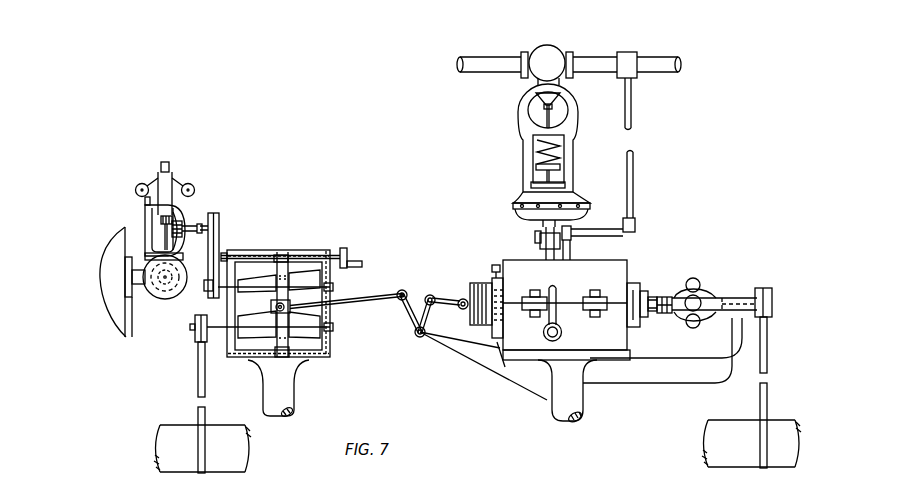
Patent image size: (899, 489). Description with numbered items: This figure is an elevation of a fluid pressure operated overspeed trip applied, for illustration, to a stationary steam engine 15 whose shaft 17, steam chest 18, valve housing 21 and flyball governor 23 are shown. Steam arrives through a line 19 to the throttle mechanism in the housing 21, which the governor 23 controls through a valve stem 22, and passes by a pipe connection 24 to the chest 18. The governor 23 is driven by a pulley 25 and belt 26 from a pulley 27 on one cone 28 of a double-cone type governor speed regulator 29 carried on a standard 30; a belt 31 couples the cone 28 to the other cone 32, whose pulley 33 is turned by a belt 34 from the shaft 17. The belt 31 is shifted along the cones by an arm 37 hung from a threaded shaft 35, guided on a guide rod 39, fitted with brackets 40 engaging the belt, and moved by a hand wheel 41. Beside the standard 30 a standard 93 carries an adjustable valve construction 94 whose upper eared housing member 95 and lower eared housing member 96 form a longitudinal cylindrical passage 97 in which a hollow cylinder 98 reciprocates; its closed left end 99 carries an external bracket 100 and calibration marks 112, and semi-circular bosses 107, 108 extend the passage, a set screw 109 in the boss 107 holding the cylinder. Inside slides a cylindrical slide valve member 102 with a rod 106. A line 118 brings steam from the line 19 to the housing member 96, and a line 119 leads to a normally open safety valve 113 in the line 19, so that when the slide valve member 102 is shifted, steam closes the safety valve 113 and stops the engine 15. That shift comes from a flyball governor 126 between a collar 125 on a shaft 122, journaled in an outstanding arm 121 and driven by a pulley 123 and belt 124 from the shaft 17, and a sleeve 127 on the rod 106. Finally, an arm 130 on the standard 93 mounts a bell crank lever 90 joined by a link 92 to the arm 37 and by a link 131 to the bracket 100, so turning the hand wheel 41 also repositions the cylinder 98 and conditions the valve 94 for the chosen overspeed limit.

The stationary steam engine 15 is at (99, 316).
The shaft 17 is at (168, 446).
The steam chest 18 is at (108, 277).
The line 19 is at (490, 62).
The housing 21 is at (164, 291).
The valve stem 22 is at (165, 240).
The flyball governor 23 is at (170, 178).
The pipe connection 24 is at (137, 286).
The pulley 25 is at (218, 217).
The belt 26 is at (215, 251).
The pulley 27 is at (212, 296).
The cone 28 is at (310, 282).
The double-cone type governor speed regulator 29 is at (346, 366).
The standard 30 is at (281, 398).
The belt 31 is at (273, 285).
The cone 32 is at (252, 333).
The pulley 33 is at (195, 338).
The belt 34 is at (198, 375).
The threaded shaft 35 is at (302, 257).
The arm 37 is at (281, 268).
The guide rod 39 is at (312, 348).
The brackets 40 is at (271, 307).
The hand wheel 41 is at (349, 253).
The bell crank lever 90 is at (413, 316).
The link 92 is at (357, 308).
The standard 93 is at (550, 418).
The adjustable valve construction 94 is at (622, 258).
The upper eared housing member 95 is at (566, 310).
The lower eared housing member 96 is at (513, 340).
The longitudinal cylindrical passage 97 is at (519, 486).
The hollow cylinder 98 is at (480, 287).
The closed left end 99 is at (473, 298).
The external bracket 100 is at (461, 309).
The cylindrical slide valve member 102 is at (652, 296).
The rod 106 is at (647, 318).
The semi-circular boss 107 is at (496, 288).
The semi-circular boss 108 is at (494, 333).
The set screw 109 is at (496, 264).
The calibration marks 112 is at (404, 290).
The safety valve 113 is at (551, 52).
The line 118 is at (632, 105).
The line 119 is at (546, 229).
The outstanding arm 121 is at (640, 374).
The shaft 122 is at (740, 300).
The pulley 123 is at (767, 288).
The belt 124 is at (764, 349).
The collar 125 is at (722, 297).
The flyball governor 126 is at (694, 279).
The sleeve 127 is at (664, 297).
The arm 130 is at (505, 367).
The link 131 is at (437, 305).